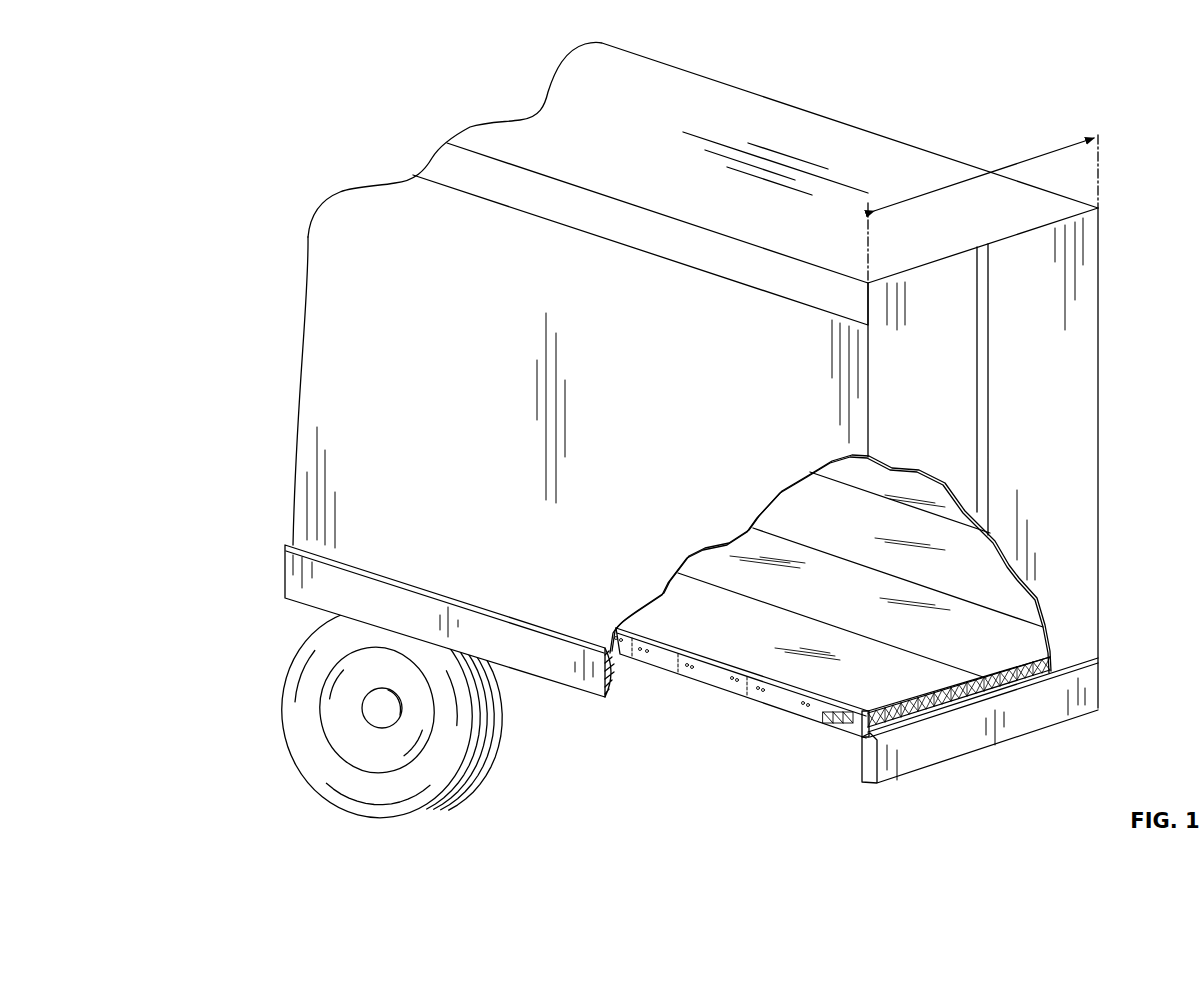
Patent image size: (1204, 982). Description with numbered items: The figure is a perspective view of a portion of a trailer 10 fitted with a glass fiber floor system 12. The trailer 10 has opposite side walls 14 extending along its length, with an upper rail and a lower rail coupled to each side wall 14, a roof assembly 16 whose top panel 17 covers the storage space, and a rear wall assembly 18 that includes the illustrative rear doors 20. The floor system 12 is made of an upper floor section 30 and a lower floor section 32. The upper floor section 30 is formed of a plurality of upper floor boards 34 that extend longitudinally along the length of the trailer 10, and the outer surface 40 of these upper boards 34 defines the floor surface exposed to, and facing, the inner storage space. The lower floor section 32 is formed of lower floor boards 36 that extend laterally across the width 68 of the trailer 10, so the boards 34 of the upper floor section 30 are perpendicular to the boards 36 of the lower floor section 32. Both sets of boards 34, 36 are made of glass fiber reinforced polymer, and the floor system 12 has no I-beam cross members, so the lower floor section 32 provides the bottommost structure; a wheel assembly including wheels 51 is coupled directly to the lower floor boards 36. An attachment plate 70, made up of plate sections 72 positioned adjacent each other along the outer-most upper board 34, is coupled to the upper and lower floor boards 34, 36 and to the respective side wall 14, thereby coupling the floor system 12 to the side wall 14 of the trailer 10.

The trailer 10 is at (324, 86).
The floor system 12 is at (990, 590).
The side wall 14 is at (343, 270).
The roof assembly 16 is at (438, 165).
The roof 17 is at (831, 138).
The rear wall assembly 18 is at (293, 580).
The rear doors 20 is at (950, 282).
The upper floor section 30 is at (875, 619).
The lower floor section 32 is at (834, 726).
The upper floor boards 34 is at (878, 527).
The lower floor boards 36 is at (884, 724).
The outer surface 40 is at (817, 534).
The wheels 51 is at (453, 787).
The width 68 is at (1057, 152).
The attachment plate 70 is at (712, 677).
The plate sections 72 is at (652, 650).